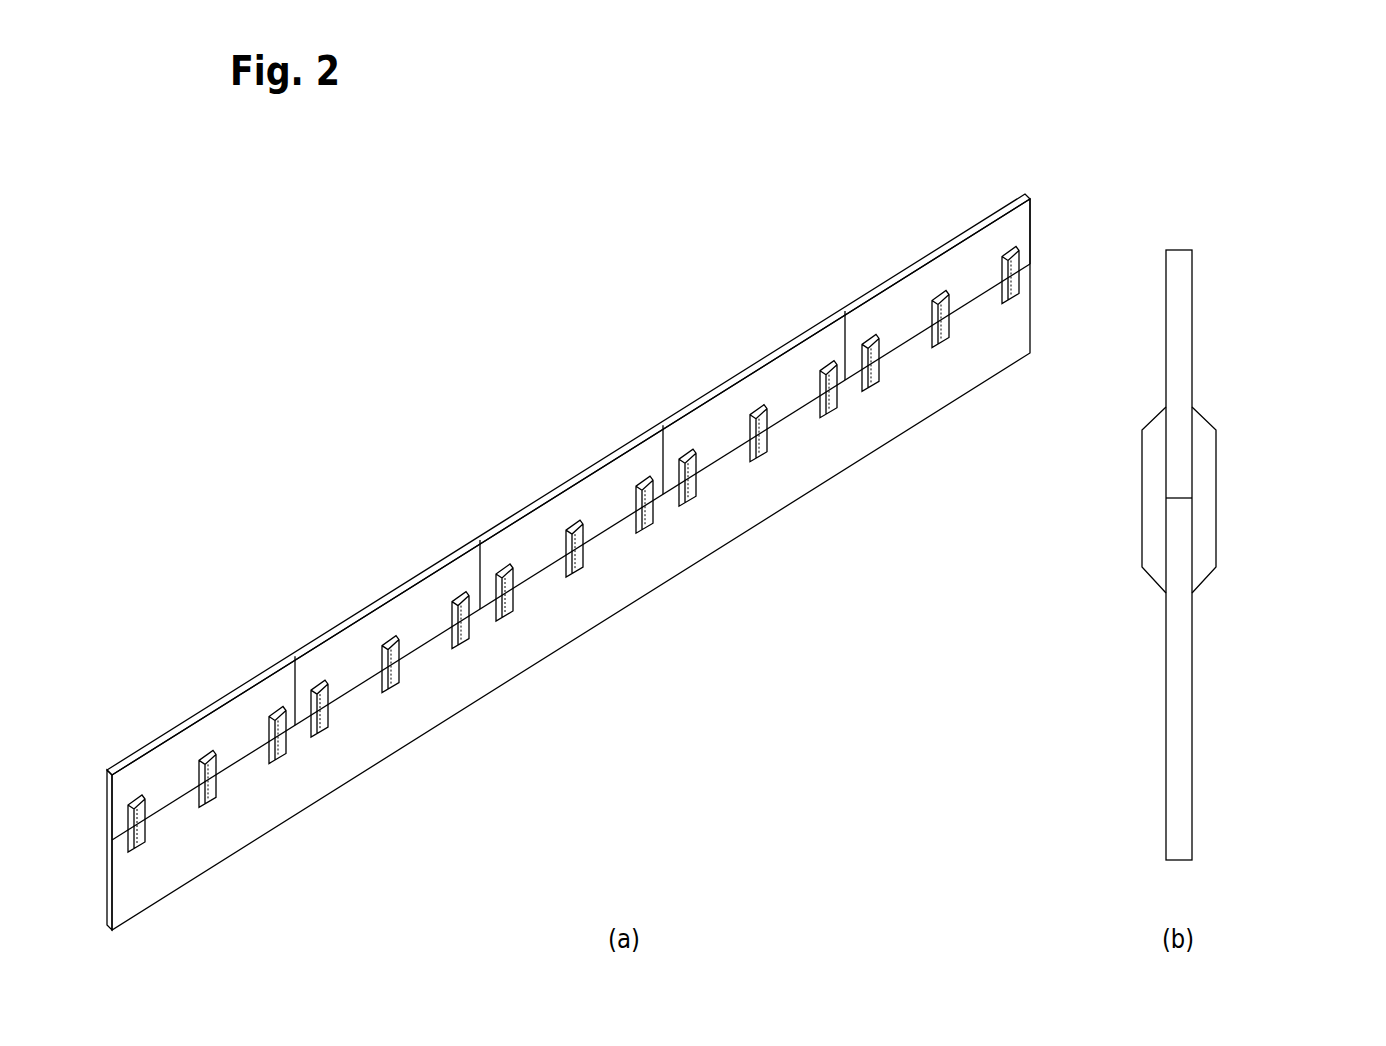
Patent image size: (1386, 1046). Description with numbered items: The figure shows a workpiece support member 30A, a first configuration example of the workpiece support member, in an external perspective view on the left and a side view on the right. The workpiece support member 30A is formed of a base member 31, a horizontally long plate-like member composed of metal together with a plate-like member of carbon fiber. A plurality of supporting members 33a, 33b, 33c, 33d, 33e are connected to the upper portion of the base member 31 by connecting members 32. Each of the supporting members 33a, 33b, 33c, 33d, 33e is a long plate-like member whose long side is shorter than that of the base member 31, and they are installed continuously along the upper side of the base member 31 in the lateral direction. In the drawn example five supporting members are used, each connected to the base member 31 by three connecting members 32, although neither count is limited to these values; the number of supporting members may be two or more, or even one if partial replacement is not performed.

The workpiece support member 30A is at (574, 234).
The base member 31 is at (750, 492).
The connecting member 32 is at (143, 830).
The supporting member 33a is at (204, 714).
The supporting member 33b is at (392, 600).
The supporting member 33c is at (567, 488).
The supporting member 33d is at (751, 373).
The supporting member 33e is at (933, 259).